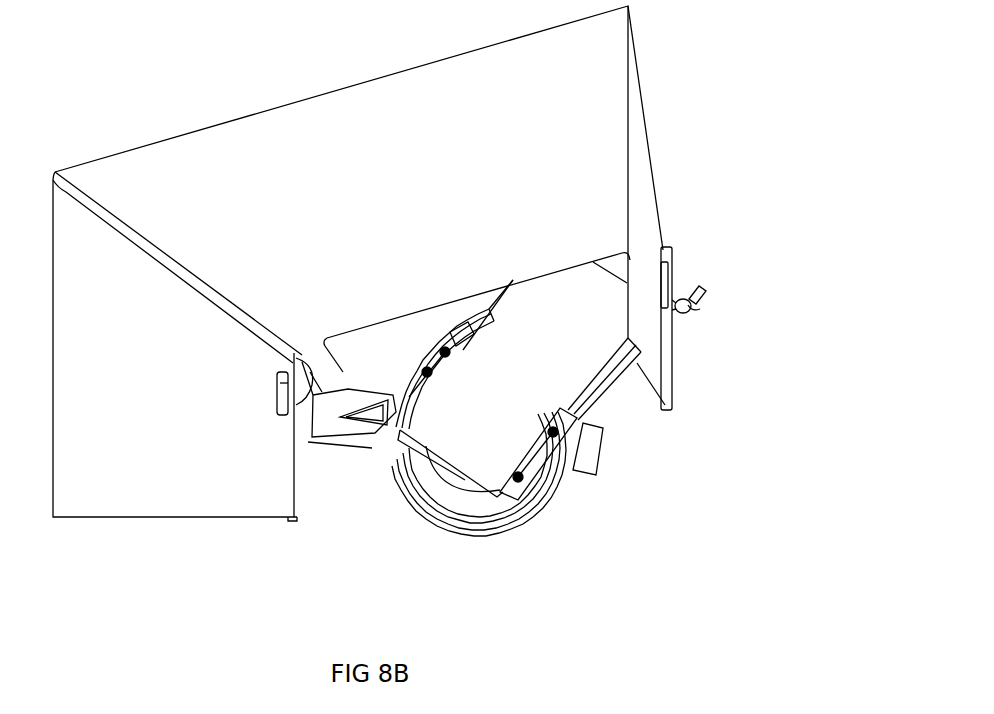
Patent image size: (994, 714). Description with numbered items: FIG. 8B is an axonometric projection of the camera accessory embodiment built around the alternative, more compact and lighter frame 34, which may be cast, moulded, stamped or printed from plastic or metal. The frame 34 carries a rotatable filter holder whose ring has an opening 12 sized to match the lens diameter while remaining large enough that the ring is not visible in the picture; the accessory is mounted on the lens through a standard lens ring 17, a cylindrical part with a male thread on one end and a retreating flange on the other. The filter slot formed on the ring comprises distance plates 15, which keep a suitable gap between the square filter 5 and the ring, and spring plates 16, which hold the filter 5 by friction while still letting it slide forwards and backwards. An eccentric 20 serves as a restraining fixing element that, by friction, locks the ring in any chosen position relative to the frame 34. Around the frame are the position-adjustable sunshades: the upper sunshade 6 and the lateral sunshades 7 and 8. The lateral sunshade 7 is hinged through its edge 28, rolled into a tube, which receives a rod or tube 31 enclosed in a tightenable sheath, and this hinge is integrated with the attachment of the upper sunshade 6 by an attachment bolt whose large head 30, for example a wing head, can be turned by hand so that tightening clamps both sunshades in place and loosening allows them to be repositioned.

The square filter 5 is at (477, 463).
The upper sunshade 6 is at (383, 273).
The lateral sunshade 7 is at (196, 475).
The lateral sunshade 8 is at (646, 340).
The opening 12 is at (450, 465).
The distance plates 15 is at (409, 397).
The spring plates 16 is at (406, 419).
The lens ring 17 is at (428, 452).
The eccentric 20 is at (585, 457).
The edge 28 is at (680, 312).
The head 30 is at (699, 312).
The rod or tube 31 is at (667, 410).
The frame 34 is at (323, 418).